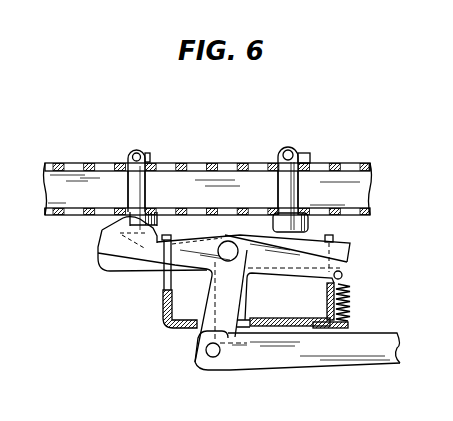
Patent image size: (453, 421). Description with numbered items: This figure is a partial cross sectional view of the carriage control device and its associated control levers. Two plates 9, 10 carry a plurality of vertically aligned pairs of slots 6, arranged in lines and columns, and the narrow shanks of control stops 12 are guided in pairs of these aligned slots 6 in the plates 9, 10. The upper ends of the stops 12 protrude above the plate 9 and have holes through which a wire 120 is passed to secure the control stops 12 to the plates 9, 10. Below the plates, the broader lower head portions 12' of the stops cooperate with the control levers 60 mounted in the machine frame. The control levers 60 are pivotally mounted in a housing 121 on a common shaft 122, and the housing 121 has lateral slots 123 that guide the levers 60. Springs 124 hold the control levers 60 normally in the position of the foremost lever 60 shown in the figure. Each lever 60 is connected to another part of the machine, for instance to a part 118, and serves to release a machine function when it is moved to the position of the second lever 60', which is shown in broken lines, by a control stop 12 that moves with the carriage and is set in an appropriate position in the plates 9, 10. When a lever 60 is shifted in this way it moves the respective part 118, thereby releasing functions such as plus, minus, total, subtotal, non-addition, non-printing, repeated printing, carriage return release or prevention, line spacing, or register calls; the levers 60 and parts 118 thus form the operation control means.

The slots 6 is at (198, 163).
The plate 9 is at (362, 163).
The plate 10 is at (57, 218).
The control stop 12 is at (197, 189).
The lower head portion 12' is at (217, 229).
The control lever 60 is at (253, 281).
The second lever 60' is at (139, 254).
The part 118 is at (291, 358).
The wire 120 is at (136, 150).
The housing 121 is at (178, 332).
The common shaft 122 is at (220, 243).
The lateral slots 123 is at (162, 283).
The spring 124 is at (347, 295).